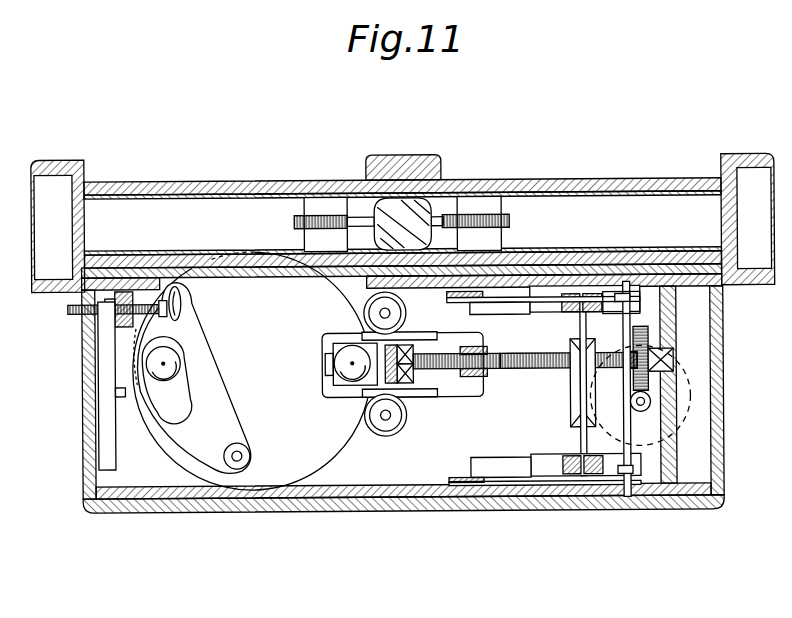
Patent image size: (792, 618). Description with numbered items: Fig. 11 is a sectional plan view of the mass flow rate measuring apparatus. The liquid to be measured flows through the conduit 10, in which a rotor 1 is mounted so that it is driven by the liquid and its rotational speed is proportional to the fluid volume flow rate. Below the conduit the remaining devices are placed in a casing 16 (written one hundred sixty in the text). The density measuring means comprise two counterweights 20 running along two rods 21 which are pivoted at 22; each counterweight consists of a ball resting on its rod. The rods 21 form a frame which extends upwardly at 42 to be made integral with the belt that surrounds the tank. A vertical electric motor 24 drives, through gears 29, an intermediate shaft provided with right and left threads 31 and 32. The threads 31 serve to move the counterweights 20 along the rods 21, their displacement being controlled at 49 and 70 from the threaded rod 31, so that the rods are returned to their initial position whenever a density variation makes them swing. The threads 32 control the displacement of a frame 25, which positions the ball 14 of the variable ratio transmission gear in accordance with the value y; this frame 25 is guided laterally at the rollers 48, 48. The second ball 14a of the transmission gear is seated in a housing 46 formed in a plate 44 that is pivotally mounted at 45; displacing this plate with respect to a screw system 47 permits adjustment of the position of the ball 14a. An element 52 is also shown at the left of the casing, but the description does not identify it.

The rotor 1 is at (422, 208).
The conduit 10 is at (212, 181).
The ball 14 is at (349, 358).
The ball 14a is at (168, 360).
The casing 16 is at (333, 443).
The counterweight 20 is at (592, 296).
The rod 21 is at (513, 297).
The pivot 22 is at (627, 287).
The electric motor 24 is at (686, 413).
The frame 25 is at (463, 392).
The gears 29 is at (620, 362).
The threads 31 is at (555, 368).
The threads 32 is at (500, 354).
The upward extension of the frame 42 is at (457, 298).
The plate 44 is at (215, 407).
The pivot 45 is at (247, 454).
The housing 46 is at (188, 387).
The screw system 47 is at (124, 306).
The lateral guides 48 is at (404, 309).
The counterweight displacement control 49 is at (590, 386).
The bar 52 is at (105, 388).
The counterweight displacement control 70 is at (585, 330).